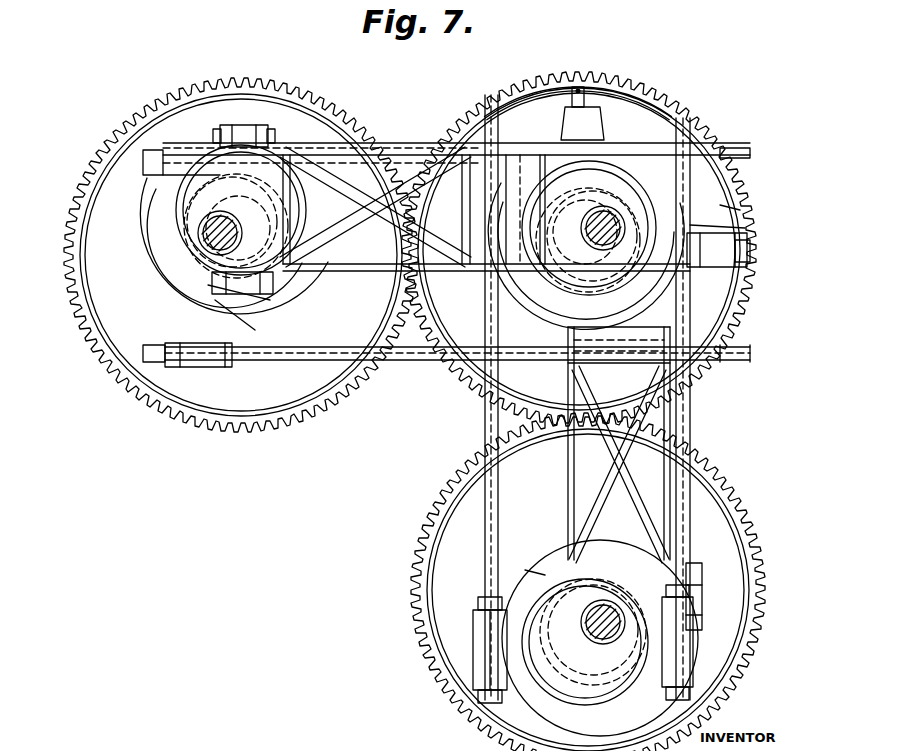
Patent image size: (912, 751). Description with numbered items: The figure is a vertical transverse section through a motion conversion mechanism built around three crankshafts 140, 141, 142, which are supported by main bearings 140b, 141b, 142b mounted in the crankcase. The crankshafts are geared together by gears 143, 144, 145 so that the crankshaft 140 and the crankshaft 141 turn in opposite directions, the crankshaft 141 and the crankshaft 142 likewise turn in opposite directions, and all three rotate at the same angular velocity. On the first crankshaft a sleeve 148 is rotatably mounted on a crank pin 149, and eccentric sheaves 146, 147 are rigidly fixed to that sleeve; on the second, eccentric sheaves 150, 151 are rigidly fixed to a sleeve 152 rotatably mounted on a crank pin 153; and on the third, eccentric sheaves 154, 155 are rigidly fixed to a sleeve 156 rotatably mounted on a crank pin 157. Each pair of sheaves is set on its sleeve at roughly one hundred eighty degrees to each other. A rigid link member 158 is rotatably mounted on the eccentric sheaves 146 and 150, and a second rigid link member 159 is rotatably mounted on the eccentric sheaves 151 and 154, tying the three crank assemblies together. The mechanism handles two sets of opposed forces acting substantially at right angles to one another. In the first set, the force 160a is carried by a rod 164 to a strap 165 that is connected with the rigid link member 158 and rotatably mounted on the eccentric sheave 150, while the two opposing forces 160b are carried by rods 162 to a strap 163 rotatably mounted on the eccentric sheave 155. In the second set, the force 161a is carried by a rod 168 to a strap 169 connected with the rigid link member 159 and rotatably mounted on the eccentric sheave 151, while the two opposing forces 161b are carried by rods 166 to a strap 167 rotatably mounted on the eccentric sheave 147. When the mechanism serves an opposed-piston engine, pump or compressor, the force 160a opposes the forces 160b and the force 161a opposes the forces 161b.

The crankshaft 140 is at (272, 287).
The main bearing 140b is at (300, 305).
The crankshaft 141 is at (560, 298).
The main bearing 141b is at (480, 270).
The crankshaft 142 is at (560, 572).
The main bearing 142b is at (525, 578).
The gear 143 is at (238, 430).
The gear 144 is at (700, 128).
The gear 145 is at (730, 495).
The eccentric sheave 146 is at (292, 128).
The eccentric sheave 147 is at (135, 298).
The sleeve 148 is at (200, 262).
The crank pin 149 is at (245, 210).
The eccentric sheave 150 is at (545, 160).
The eccentric sheave 151 is at (700, 290).
The sleeve 152 is at (650, 215).
The crank pin 153 is at (650, 205).
The eccentric sheave 154 is at (690, 560).
The eccentric sheave 155 is at (548, 690).
The sleeve 156 is at (598, 640).
The crank pin 157 is at (638, 690).
The rigid link member 158 is at (385, 150).
The second rigid link member 159 is at (566, 385).
The force 160a is at (583, 72).
The forces 160b is at (487, 128).
The force 161a is at (750, 253).
The forces 161b is at (720, 157).
The rods 162 is at (740, 205).
The strap 163 is at (552, 722).
The rod 164 is at (600, 90).
The strap 165 is at (610, 140).
The rods 166 is at (708, 132).
The strap 167 is at (248, 330).
The rod 168 is at (748, 240).
The strap 169 is at (745, 222).